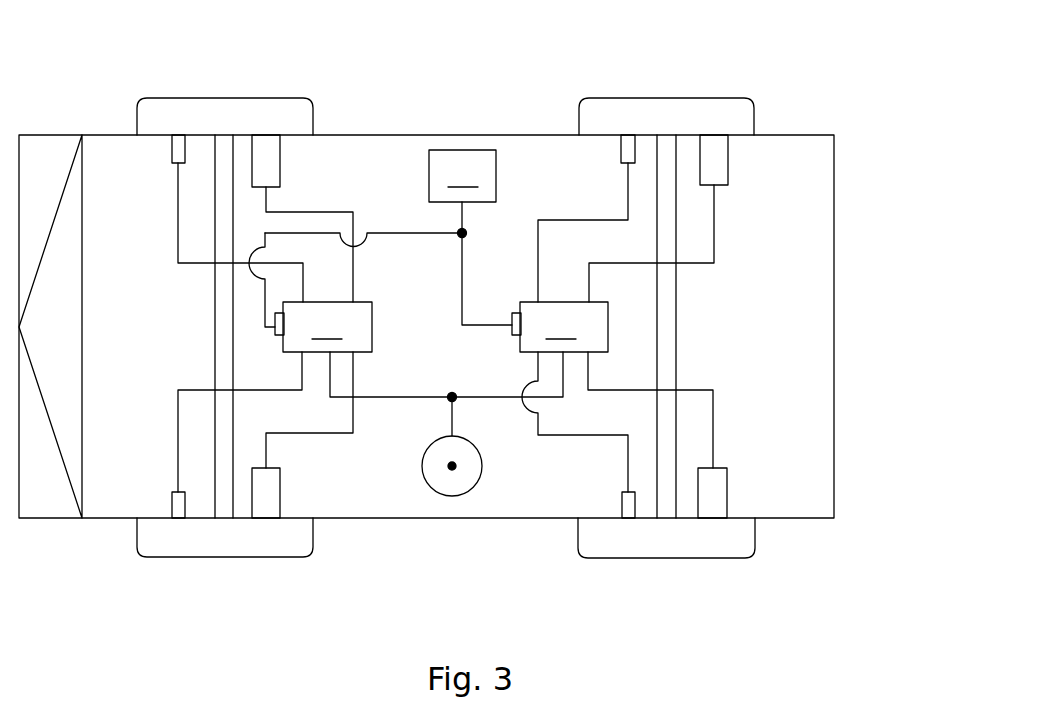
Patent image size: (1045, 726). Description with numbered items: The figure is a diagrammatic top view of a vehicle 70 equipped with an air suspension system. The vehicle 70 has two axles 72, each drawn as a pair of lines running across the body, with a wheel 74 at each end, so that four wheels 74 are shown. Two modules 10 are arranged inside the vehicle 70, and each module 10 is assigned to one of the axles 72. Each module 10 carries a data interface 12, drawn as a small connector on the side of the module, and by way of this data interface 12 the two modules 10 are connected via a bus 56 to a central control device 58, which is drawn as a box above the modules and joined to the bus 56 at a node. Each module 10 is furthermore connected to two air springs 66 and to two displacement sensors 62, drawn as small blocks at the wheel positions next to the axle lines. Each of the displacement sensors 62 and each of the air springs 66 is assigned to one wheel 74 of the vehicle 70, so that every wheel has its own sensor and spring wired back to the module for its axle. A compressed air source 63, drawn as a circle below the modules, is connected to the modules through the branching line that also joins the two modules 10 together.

The module 10 is at (445, 327).
The data interface 12 is at (277, 332).
The bus 56 is at (460, 285).
The control device 58 is at (462, 176).
The displacement sensor 62 is at (172, 152).
The compressed air source 63 is at (425, 460).
The air spring 66 is at (263, 162).
The vehicle 70 is at (836, 275).
The axle 72 is at (227, 305).
The wheel 74 is at (240, 97).